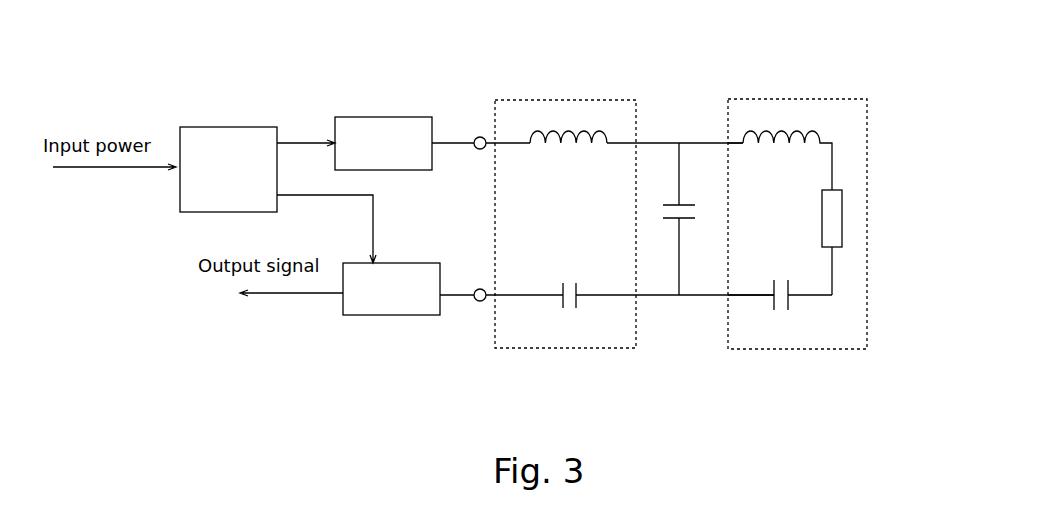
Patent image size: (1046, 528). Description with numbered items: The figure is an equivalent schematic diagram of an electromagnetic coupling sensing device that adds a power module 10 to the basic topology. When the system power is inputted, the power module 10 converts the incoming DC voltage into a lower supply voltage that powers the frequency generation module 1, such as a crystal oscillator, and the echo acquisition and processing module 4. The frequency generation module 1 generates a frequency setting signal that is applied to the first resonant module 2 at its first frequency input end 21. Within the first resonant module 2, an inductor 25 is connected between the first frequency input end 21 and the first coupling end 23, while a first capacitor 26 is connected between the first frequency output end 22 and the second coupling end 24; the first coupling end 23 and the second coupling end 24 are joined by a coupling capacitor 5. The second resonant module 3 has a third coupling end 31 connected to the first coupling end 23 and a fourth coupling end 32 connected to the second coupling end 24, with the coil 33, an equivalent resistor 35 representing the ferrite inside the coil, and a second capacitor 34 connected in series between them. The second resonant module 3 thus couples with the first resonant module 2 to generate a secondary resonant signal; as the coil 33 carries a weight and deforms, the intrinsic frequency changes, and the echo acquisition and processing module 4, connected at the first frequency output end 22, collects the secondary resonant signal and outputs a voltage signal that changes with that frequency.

The power module 10 is at (228, 169).
The frequency generation module 1 is at (383, 143).
The echo acquisition and processing module 4 is at (391, 289).
The first resonant module 2 is at (590, 100).
The first frequency input end 21 is at (498, 140).
The first frequency output end 22 is at (520, 297).
The first coupling end 23 is at (640, 140).
The second coupling end 24 is at (625, 297).
The inductor 25 is at (602, 140).
The first capacitor 26 is at (555, 297).
The coupling capacitor 5 is at (683, 237).
The second resonant module 3 is at (832, 100).
The third coupling end 31 is at (735, 140).
The fourth coupling end 32 is at (738, 297).
The coil 33 is at (823, 135).
The second capacitor 34 is at (797, 313).
The equivalent resistor 35 is at (845, 235).